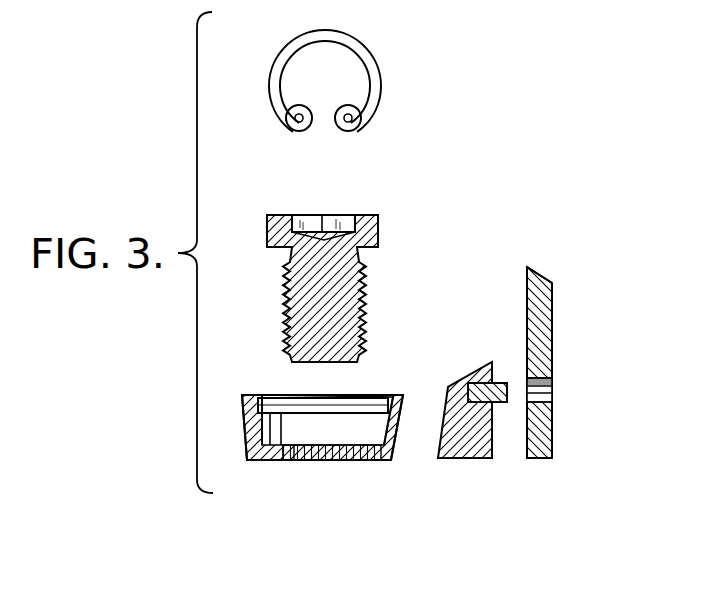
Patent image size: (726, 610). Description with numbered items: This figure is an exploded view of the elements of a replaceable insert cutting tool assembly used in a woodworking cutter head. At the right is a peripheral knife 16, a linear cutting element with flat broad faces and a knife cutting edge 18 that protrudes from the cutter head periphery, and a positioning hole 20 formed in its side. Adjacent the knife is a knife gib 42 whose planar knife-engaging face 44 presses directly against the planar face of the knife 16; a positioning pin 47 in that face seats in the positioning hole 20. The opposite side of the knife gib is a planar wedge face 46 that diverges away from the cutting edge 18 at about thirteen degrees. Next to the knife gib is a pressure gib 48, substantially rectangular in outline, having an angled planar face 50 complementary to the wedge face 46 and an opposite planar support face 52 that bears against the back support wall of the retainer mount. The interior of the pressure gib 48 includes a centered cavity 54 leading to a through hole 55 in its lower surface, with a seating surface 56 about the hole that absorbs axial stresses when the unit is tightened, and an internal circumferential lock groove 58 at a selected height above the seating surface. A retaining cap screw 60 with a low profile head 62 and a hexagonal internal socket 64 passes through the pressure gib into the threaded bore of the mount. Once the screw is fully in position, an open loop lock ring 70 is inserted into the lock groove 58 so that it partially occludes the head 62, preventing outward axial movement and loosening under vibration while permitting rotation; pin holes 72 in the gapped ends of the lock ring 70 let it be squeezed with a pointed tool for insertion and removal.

The peripheral knife 16 is at (569, 349).
The knife cutting edge 18 is at (530, 266).
The positioning hole 20 is at (535, 400).
The knife gib 42 is at (480, 460).
The knife-engaging face 44 is at (492, 365).
The wedge face 46 is at (479, 420).
The positioning pin 47 is at (505, 404).
The pressure gib 48 is at (317, 422).
The angled planar face 50 is at (390, 452).
The planar support face 52 is at (231, 410).
The centered cavity 54 is at (290, 397).
The through hole 55 is at (294, 462).
The seating surface 56 is at (356, 453).
The internal circumferential lock groove 58 is at (375, 397).
The retaining cap screw 60 is at (364, 256).
The low profile head 62 is at (385, 214).
The internal socket 64 is at (352, 222).
The lock ring 70 is at (358, 40).
The pin holes 72 is at (340, 128).